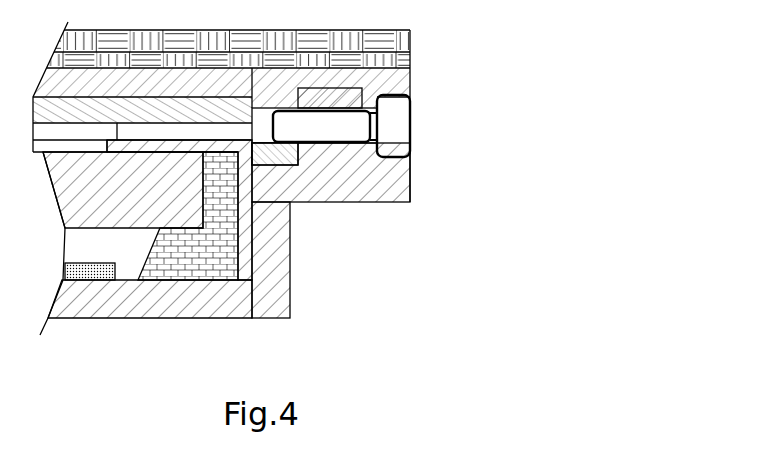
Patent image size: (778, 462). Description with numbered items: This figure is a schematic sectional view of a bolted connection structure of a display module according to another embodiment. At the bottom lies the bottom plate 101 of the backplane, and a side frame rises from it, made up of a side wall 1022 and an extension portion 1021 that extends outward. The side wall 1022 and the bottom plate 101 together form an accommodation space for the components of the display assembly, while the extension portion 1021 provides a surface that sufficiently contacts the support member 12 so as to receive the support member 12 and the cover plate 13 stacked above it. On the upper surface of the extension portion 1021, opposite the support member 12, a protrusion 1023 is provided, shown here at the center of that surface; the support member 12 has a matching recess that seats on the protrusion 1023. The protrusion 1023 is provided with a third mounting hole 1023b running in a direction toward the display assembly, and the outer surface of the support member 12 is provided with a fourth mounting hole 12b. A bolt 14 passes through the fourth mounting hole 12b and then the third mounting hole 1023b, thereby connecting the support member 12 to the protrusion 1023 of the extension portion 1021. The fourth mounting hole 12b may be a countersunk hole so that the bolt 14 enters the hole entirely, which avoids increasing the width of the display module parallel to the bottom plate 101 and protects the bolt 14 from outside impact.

The cover plate 13 is at (395, 47).
The support member 12 is at (395, 75).
The fourth mounting hole 12b is at (397, 93).
The bolt 14 is at (395, 125).
The third mounting hole 1023b is at (357, 143).
The protrusion 1023 is at (352, 155).
The extension portion 1021 is at (323, 193).
The side wall 1022 is at (265, 295).
The bottom plate 101 is at (145, 300).